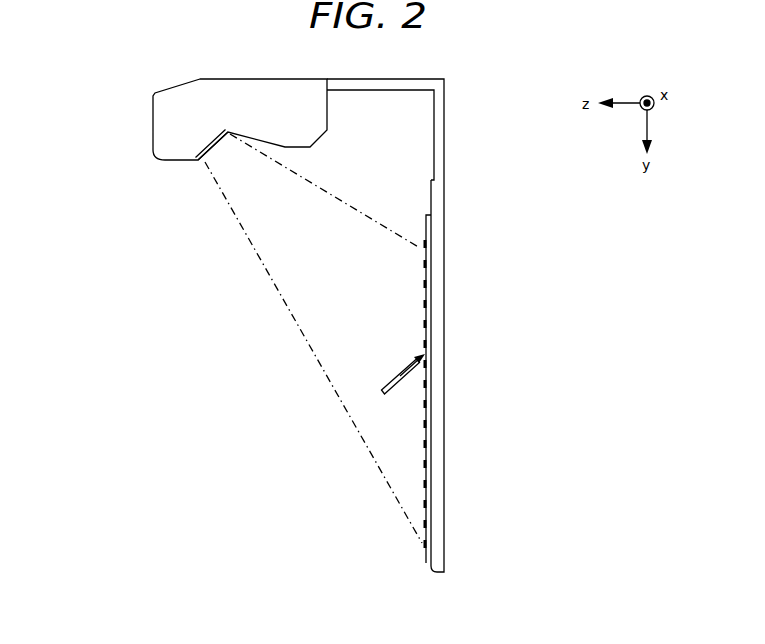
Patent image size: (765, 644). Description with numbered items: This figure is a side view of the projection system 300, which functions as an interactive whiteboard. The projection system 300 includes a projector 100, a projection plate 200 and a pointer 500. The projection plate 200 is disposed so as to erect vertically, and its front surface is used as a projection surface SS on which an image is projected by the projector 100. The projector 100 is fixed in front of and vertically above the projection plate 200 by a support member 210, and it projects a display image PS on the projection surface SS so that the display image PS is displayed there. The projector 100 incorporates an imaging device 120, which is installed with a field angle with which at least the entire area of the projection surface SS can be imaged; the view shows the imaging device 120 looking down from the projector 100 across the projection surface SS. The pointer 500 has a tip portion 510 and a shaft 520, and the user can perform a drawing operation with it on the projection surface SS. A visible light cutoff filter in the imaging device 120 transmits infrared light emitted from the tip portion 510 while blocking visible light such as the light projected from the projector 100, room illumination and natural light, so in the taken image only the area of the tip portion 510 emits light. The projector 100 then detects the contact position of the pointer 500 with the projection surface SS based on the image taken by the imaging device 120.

The projector 100 is at (152, 127).
The imaging device 120 is at (217, 152).
The projection plate 200 is at (440, 198).
The support member 210 is at (412, 85).
The projection system 300 is at (157, 375).
The pointer 500 is at (363, 332).
The tip portion 510 is at (414, 356).
The shaft 520 is at (403, 371).
The projection surface SS is at (425, 228).
The display image PS is at (423, 300).